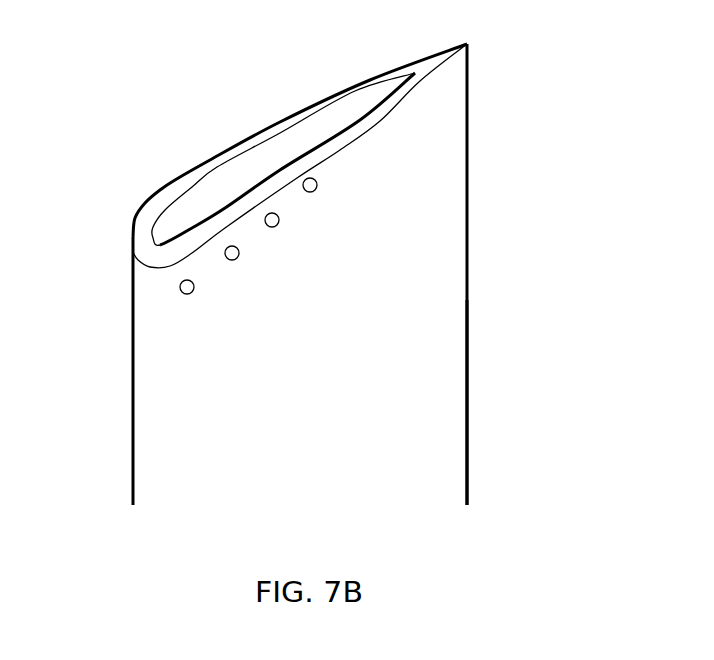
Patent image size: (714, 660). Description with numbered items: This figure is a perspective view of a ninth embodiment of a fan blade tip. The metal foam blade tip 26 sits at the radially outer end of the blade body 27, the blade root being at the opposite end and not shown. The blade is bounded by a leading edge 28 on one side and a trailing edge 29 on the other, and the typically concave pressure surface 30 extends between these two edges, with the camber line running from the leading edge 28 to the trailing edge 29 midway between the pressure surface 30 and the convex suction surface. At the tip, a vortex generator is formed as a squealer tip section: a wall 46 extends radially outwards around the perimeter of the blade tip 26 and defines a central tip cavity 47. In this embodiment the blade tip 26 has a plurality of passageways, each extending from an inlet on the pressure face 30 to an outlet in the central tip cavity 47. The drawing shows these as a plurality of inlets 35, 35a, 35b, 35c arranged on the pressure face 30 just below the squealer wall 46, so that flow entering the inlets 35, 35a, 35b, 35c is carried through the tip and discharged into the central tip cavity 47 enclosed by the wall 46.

The blade tip 26 is at (94, 176).
The blade body 27 is at (398, 473).
The leading edge 28 is at (132, 360).
The trailing edge 29 is at (468, 205).
The pressure surface 30 is at (352, 278).
The inlet 35 is at (178, 290).
The inlet 35a is at (235, 260).
The inlet 35b is at (277, 225).
The inlet 35c is at (316, 189).
The wall 46 is at (393, 100).
The central tip cavity 47 is at (260, 162).